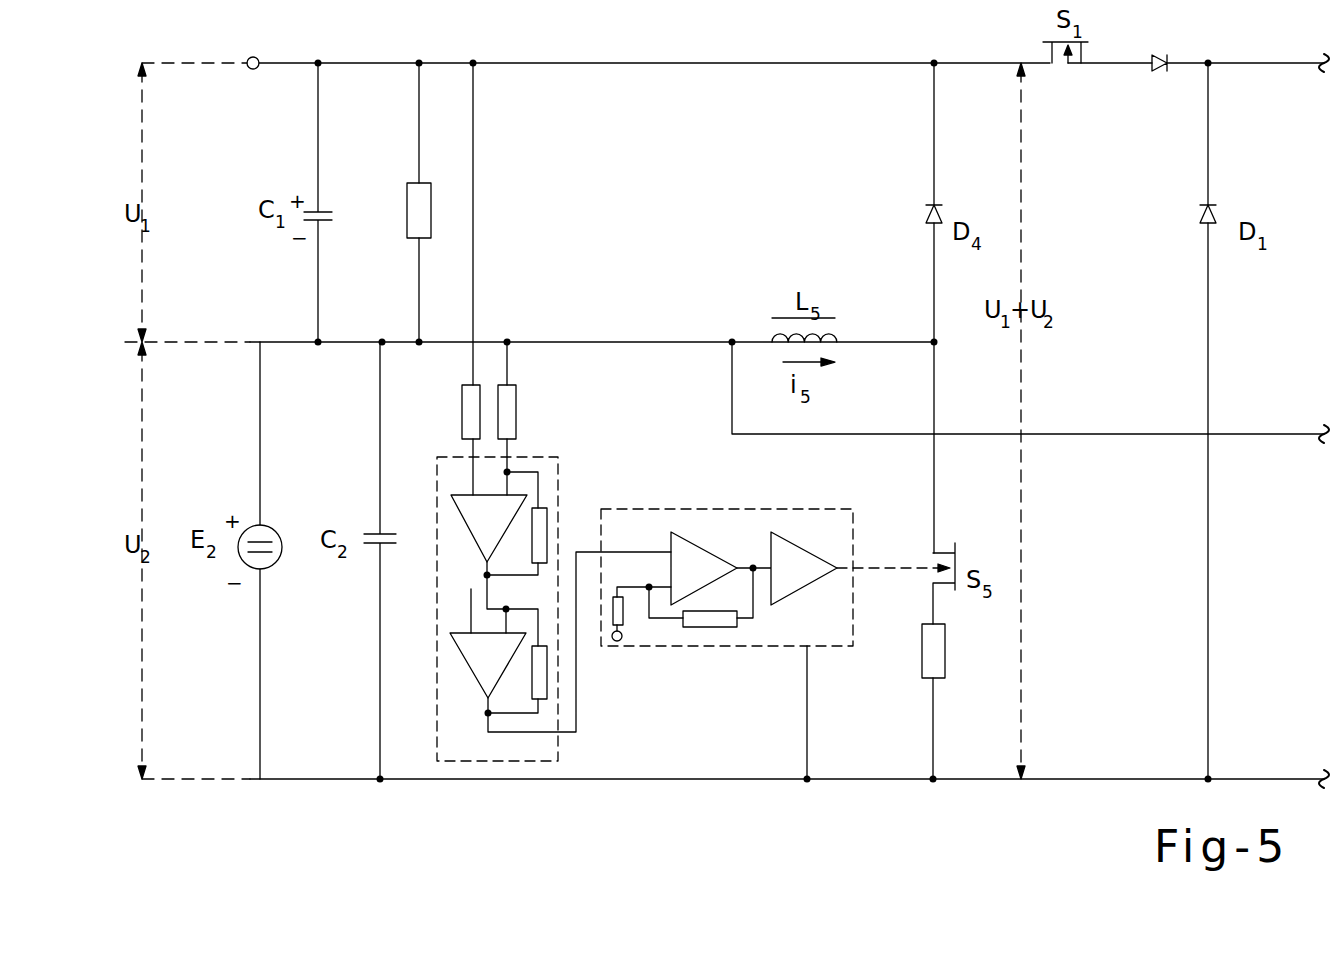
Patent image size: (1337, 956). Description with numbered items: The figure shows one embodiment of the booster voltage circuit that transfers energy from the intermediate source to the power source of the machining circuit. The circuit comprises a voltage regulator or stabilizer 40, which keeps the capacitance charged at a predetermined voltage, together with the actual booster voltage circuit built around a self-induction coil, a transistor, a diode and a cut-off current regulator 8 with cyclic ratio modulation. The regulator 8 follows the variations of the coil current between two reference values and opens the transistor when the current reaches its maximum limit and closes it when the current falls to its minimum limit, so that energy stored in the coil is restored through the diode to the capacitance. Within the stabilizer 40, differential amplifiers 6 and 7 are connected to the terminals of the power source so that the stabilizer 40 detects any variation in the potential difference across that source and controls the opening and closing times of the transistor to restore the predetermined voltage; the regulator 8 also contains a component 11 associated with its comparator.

The differential amplifier 6 is at (476, 542).
The differential amplifier 7 is at (473, 677).
The cut-off current regulator 8 is at (765, 644).
The hysteresis resistor 11 is at (698, 628).
The voltage regulator or stabilizer 40 is at (535, 650).